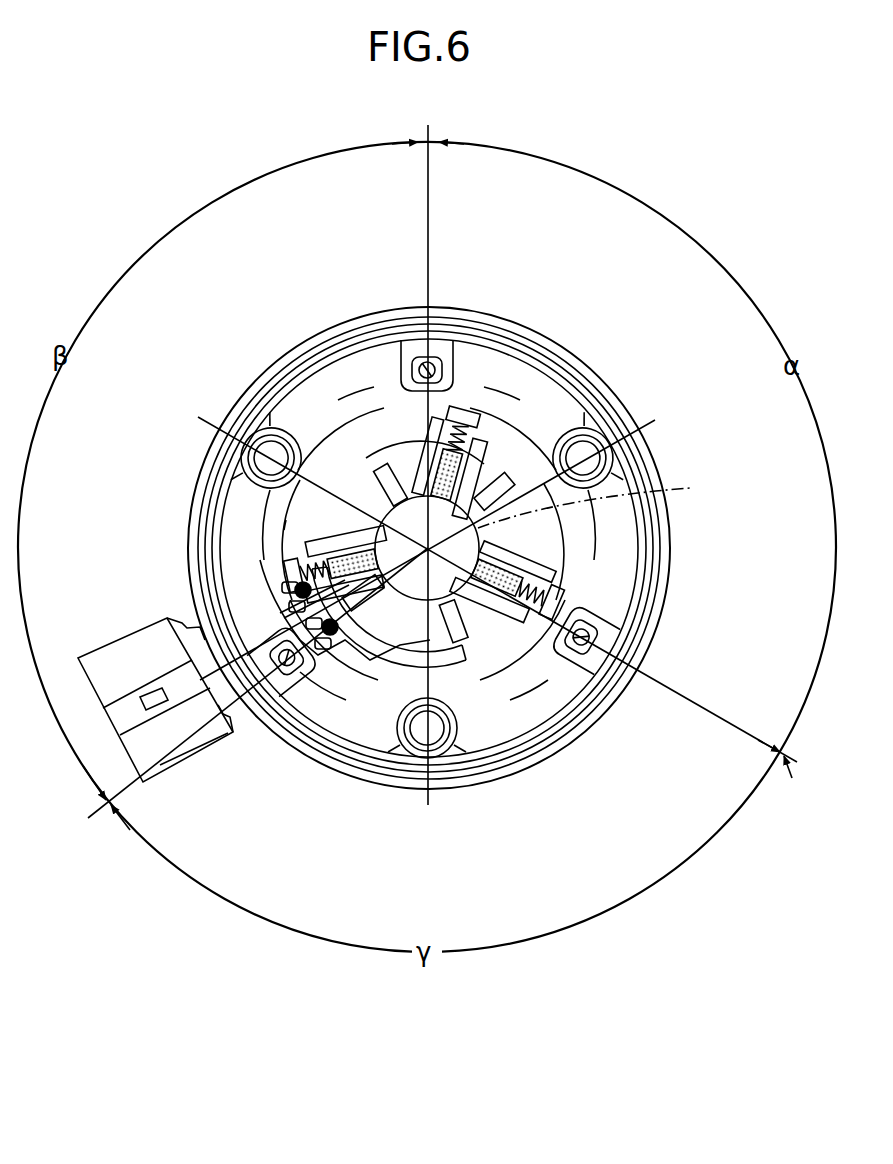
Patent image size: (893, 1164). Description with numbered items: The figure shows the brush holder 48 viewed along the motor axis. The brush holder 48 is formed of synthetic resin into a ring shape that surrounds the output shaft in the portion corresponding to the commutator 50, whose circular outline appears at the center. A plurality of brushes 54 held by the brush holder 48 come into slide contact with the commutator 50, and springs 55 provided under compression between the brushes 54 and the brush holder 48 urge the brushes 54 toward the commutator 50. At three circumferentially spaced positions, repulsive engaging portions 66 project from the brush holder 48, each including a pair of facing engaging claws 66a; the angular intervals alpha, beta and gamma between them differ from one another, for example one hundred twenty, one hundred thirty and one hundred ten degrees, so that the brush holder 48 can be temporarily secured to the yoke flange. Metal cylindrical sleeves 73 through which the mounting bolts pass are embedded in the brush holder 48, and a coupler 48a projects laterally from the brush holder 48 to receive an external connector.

The brush holder 48 is at (456, 322).
The coupler 48a is at (122, 660).
The commutator 50 is at (549, 538).
The brushes 54 is at (360, 522).
The springs 55 is at (457, 440).
The repulsive engaging portions 66 is at (418, 355).
The engaging claws 66a is at (598, 627).
The cylindrical sleeves 73 is at (313, 432).